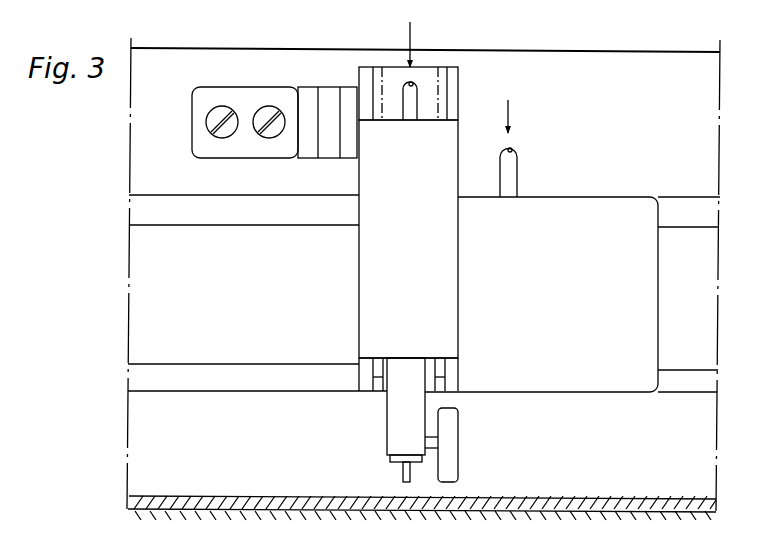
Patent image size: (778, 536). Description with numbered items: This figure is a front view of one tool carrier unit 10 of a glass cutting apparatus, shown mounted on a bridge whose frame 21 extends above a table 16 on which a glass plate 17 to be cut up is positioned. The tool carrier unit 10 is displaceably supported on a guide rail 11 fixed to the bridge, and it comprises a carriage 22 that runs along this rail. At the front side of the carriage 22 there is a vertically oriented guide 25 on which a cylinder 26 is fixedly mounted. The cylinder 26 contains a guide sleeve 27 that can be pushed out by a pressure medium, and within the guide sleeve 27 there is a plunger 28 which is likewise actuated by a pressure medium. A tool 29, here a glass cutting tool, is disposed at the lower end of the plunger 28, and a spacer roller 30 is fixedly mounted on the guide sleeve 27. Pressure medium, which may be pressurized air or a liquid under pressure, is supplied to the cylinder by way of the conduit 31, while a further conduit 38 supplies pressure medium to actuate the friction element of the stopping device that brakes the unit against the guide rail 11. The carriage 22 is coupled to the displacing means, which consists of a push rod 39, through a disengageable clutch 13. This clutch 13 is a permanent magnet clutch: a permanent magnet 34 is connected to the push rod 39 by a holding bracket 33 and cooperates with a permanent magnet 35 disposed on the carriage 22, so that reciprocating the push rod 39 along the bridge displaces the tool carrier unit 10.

The tool carrier unit 10 is at (527, 160).
The guide rail 11 is at (147, 247).
The clutch 13 is at (316, 76).
The table 16 is at (283, 510).
The glass plate 17 is at (236, 496).
The frame 21 is at (677, 212).
The carriage 22 is at (643, 283).
The guide 25 is at (442, 80).
The cylinder 26 is at (358, 277).
The guide sleeve 27 is at (394, 406).
The plunger 28 is at (392, 457).
The tool 29 is at (405, 472).
The spacer roller 30 is at (448, 447).
The conduit 31 is at (412, 100).
The holding bracket 33 is at (239, 95).
The permanent magnet 34 is at (325, 150).
The permanent magnet 35 is at (348, 150).
The conduit 38 is at (508, 177).
The push rod 39 is at (653, 77).